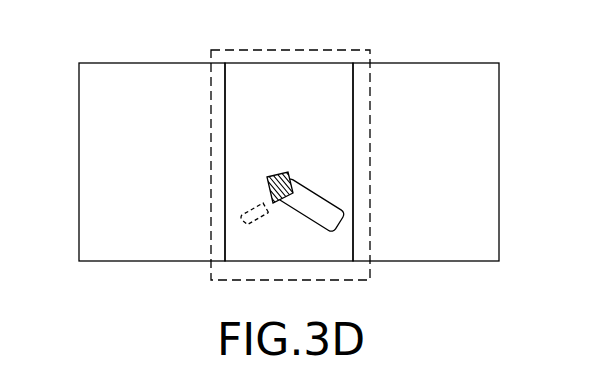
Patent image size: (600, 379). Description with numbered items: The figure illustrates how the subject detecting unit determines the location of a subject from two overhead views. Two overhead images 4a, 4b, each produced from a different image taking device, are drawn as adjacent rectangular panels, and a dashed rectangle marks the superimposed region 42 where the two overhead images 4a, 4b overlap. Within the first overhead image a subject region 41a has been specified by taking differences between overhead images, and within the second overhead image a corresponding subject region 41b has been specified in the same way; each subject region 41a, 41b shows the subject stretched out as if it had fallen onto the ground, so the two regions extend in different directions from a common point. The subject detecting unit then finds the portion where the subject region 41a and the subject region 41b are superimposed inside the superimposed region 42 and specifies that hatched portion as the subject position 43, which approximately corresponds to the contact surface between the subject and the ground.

The overhead image 4a is at (79, 150).
The overhead image 4b is at (499, 150).
The superimposed region 42 is at (263, 50).
The subject region 41a is at (323, 198).
The subject region 41b is at (258, 198).
The subject position 43 is at (283, 172).